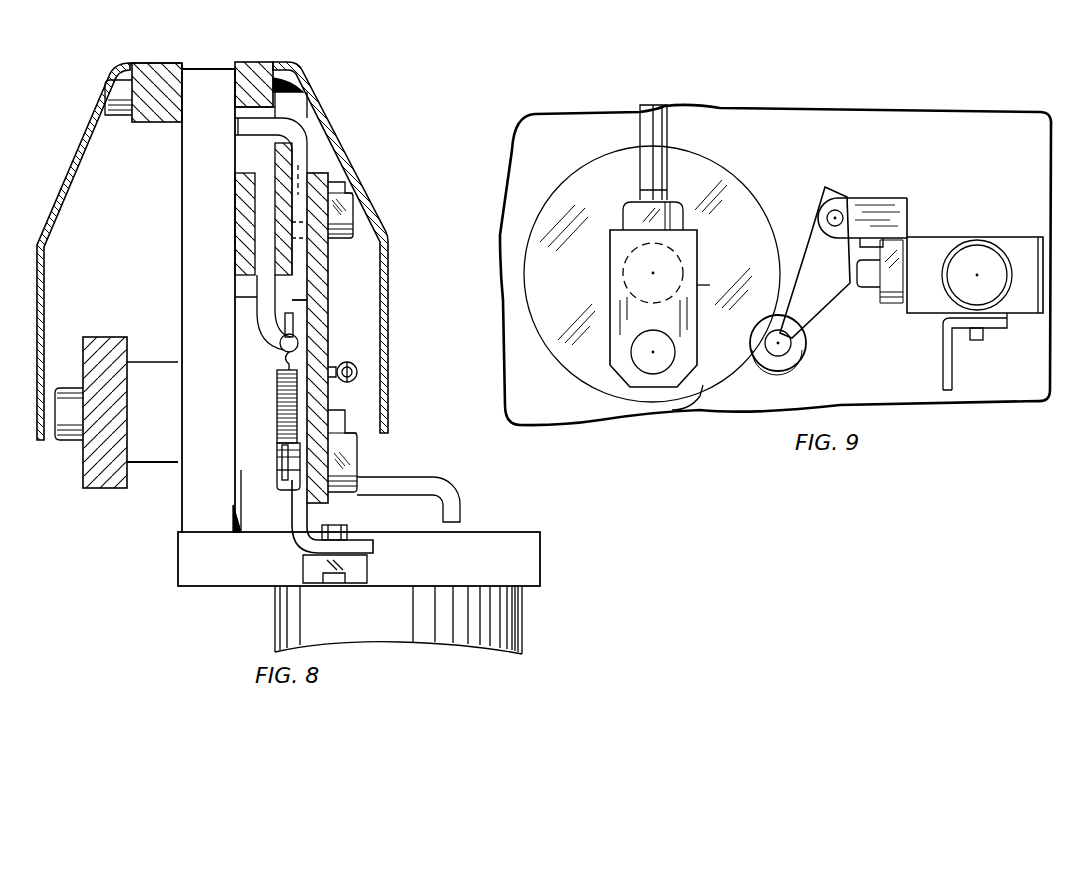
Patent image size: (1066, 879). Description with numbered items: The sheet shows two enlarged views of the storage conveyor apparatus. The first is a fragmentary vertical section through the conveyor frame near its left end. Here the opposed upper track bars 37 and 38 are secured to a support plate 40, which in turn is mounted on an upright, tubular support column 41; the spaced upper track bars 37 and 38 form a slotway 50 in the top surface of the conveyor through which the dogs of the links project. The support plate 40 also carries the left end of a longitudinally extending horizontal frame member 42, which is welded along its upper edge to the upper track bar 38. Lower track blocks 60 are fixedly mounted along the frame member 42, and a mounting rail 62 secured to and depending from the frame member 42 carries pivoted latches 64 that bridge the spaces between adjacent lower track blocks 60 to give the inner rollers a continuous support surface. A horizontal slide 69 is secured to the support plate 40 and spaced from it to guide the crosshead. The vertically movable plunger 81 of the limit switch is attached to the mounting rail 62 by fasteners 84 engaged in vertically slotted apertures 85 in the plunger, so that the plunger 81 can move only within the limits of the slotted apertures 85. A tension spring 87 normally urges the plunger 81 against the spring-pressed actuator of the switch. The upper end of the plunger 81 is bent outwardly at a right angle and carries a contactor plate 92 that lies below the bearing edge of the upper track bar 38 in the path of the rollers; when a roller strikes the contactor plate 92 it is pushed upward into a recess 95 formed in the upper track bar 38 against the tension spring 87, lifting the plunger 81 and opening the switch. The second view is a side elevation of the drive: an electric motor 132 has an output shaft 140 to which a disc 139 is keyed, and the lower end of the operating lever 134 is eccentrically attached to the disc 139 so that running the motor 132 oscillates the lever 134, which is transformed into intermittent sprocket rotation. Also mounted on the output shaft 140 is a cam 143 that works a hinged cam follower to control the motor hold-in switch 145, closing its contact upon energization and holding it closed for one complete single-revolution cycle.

In FIG. 8, the upper track bar 37 is at (145, 70).
In FIG. 8, the upper track bar 38 is at (258, 68).
In FIG. 8, the support plate 40 is at (182, 203).
In FIG. 8, the tubular support column 41 is at (277, 606).
In FIG. 8, the horizontal frame member 42 is at (212, 251).
In FIG. 8, the slotway 50 is at (185, 70).
In FIG. 8, the lower track blocks 60 is at (238, 256).
In FIG. 8, the mounting rail 62 is at (326, 250).
In FIG. 8, the latches 64 is at (238, 297).
In FIG. 8, the horizontal slide 69 is at (99, 489).
In FIG. 8, the plunger 81 is at (300, 302).
In FIG. 8, the fasteners 84 is at (354, 215).
In FIG. 8, the vertically slotted apertures 85 is at (298, 172).
In FIG. 8, the tension spring 87 is at (278, 376).
In FIG. 8, the contactor plate 92 is at (238, 133).
In FIG. 8, the recess 95 is at (238, 108).
In FIG. 9, the electric motor 132 is at (500, 242).
In FIG. 9, the operating lever 134 is at (667, 127).
In FIG. 9, the disc 139 is at (727, 173).
In FIG. 9, the output shaft 140 is at (623, 277).
In FIG. 9, the cam 143 is at (670, 408).
In FIG. 9, the motor hold-in switch 145 is at (946, 237).